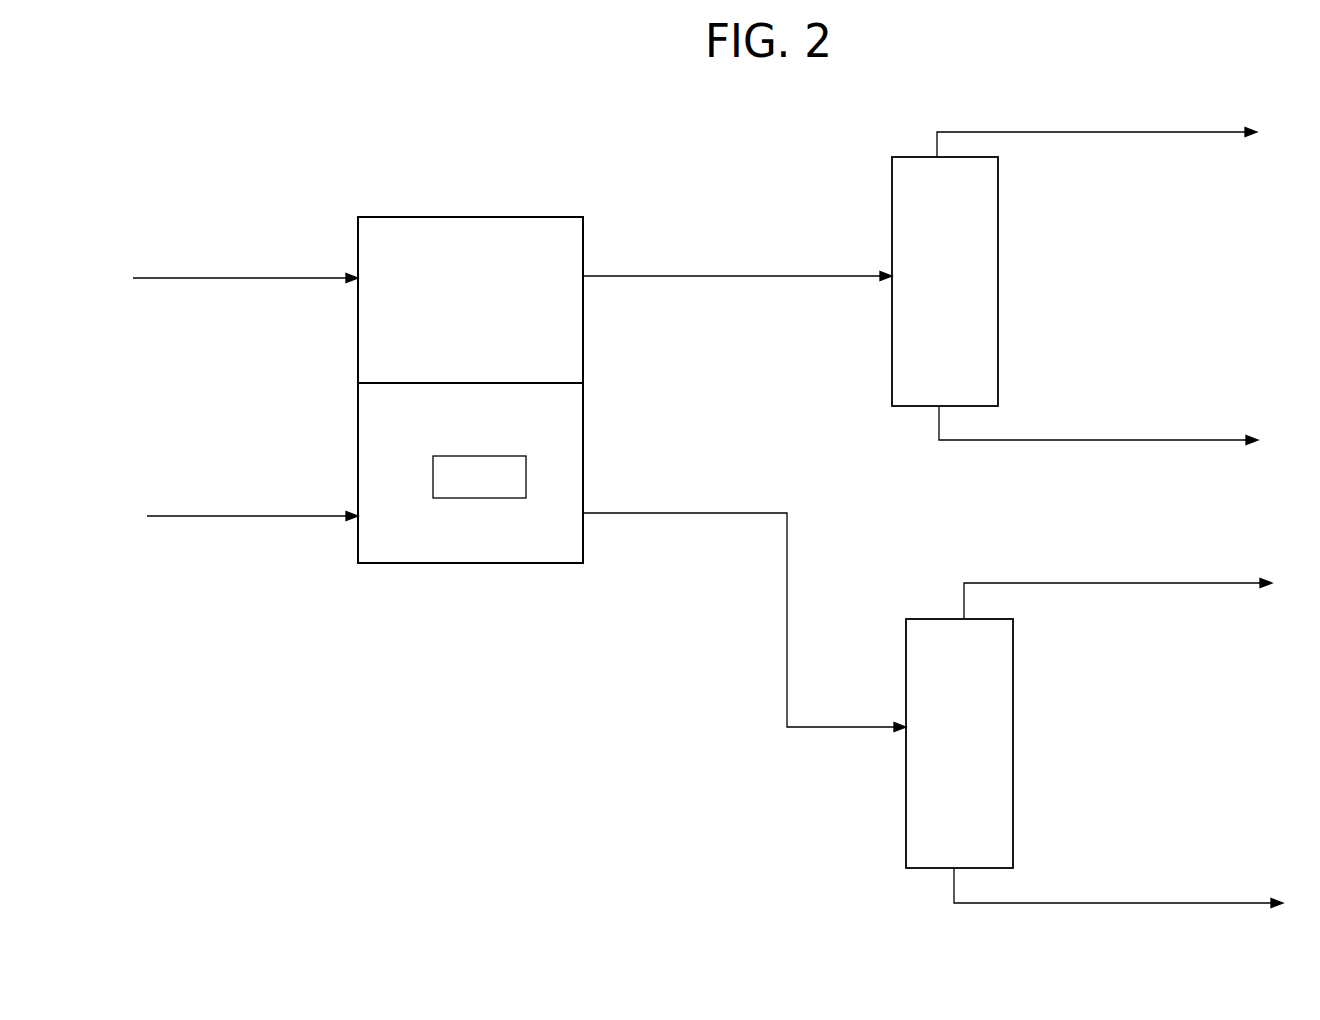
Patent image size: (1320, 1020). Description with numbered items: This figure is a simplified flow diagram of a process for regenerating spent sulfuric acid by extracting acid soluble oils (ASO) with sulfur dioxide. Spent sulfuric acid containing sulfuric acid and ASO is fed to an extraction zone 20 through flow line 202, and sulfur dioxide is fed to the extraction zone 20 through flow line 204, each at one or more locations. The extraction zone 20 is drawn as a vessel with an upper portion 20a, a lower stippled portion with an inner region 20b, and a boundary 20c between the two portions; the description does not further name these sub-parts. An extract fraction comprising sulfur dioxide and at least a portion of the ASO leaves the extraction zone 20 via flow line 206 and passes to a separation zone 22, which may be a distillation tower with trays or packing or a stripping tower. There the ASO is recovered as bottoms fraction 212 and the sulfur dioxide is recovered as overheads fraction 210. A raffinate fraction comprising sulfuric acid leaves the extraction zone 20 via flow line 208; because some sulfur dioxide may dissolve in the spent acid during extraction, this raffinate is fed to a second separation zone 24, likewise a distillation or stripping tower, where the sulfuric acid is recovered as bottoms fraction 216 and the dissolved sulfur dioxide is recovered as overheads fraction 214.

The extraction zone 20 is at (455, 467).
The upper zone of reactor 20a is at (470, 300).
The catalyst bed 20b is at (479, 477).
The interface between zones 20c is at (541, 398).
The separation zone 22 is at (1010, 280).
The separation zone 24 is at (1026, 742).
The flow line 202 is at (252, 489).
The flow line 204 is at (245, 250).
The flow line 206 is at (737, 242).
The flow line 208 is at (744, 593).
The overheads fraction 210 is at (1097, 115).
The bottoms fraction 212 is at (1098, 412).
The overheads fraction 214 is at (1118, 571).
The bottoms fraction 216 is at (1118, 875).